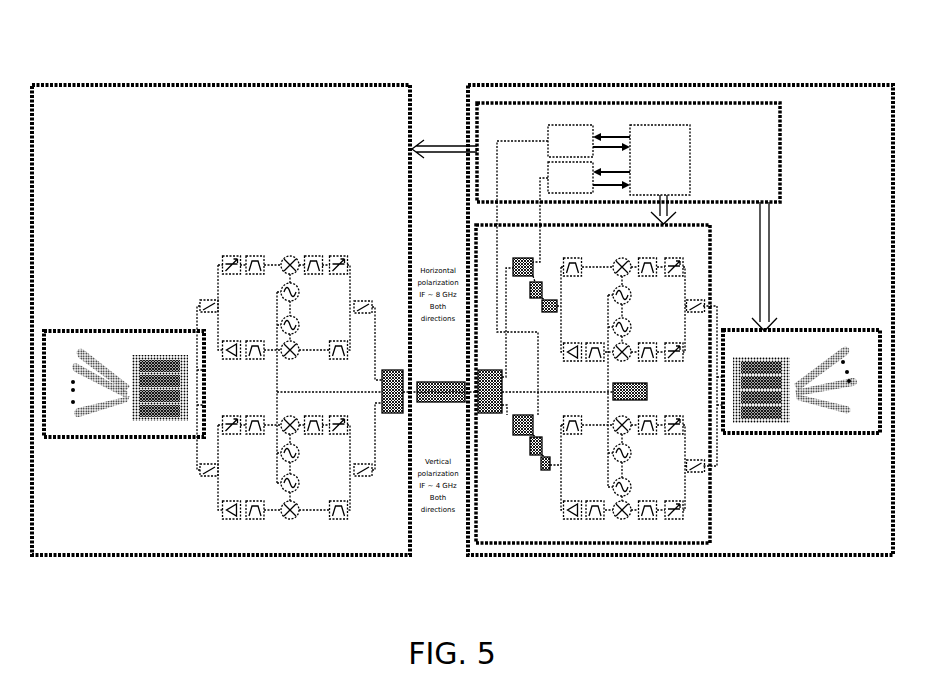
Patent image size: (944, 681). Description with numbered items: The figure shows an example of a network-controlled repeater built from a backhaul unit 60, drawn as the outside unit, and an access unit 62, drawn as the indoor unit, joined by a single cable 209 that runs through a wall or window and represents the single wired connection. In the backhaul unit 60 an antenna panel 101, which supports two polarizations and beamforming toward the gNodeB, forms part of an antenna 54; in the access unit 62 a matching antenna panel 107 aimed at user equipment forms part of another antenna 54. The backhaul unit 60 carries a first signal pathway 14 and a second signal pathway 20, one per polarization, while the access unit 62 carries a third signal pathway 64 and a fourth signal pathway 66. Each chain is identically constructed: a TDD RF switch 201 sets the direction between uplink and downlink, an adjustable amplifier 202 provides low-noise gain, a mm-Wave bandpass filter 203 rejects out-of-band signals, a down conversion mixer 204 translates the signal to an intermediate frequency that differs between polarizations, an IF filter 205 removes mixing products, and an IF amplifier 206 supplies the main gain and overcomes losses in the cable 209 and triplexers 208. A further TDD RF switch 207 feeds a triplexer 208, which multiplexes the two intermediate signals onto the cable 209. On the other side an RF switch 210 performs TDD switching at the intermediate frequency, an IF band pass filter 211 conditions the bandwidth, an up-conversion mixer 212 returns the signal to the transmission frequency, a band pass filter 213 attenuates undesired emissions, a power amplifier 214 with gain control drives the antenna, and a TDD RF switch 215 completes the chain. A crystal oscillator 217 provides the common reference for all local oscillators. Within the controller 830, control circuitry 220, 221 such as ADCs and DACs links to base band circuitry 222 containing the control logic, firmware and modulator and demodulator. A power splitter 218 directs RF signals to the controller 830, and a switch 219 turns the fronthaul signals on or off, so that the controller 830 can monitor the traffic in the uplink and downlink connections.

The backhaul unit 60 is at (193, 83).
The access unit 62 is at (680, 82).
The controller 830 is at (609, 220).
The first signal pathway 14 is at (243, 358).
The second signal pathway 20 is at (180, 492).
The antenna 54 is at (462, 391).
The third signal pathway 64 is at (663, 384).
The fourth signal pathway 66 is at (733, 507).
The antenna panel 101 is at (145, 388).
The antenna panel 107 is at (772, 390).
The TDD RF switch 201 is at (189, 379).
The adjustable amplifier 202 is at (227, 260).
The mm-Wave bandpass filter 203 is at (252, 258).
The down conversion mixer 204 is at (283, 258).
The IF filter 205 is at (310, 258).
The IF amplifier 206 is at (336, 260).
The TDD RF switch 207 is at (368, 335).
The triplexer 208 is at (392, 387).
The cable 209 is at (440, 387).
The RF switch 210 is at (495, 340).
The IF band pass filter 211 is at (568, 260).
The up-conversion mixer 212 is at (621, 260).
The band pass filter 213 is at (648, 258).
The power amplifier 214 is at (677, 256).
The TDD RF switch 215 is at (704, 378).
The crystal oscillator 217 is at (584, 391).
The power splitter 218 is at (517, 263).
The switch 219 is at (527, 290).
The control circuitry 220 is at (545, 266).
The control circuitry 221 is at (562, 212).
The base band circuitry 222 is at (670, 160).